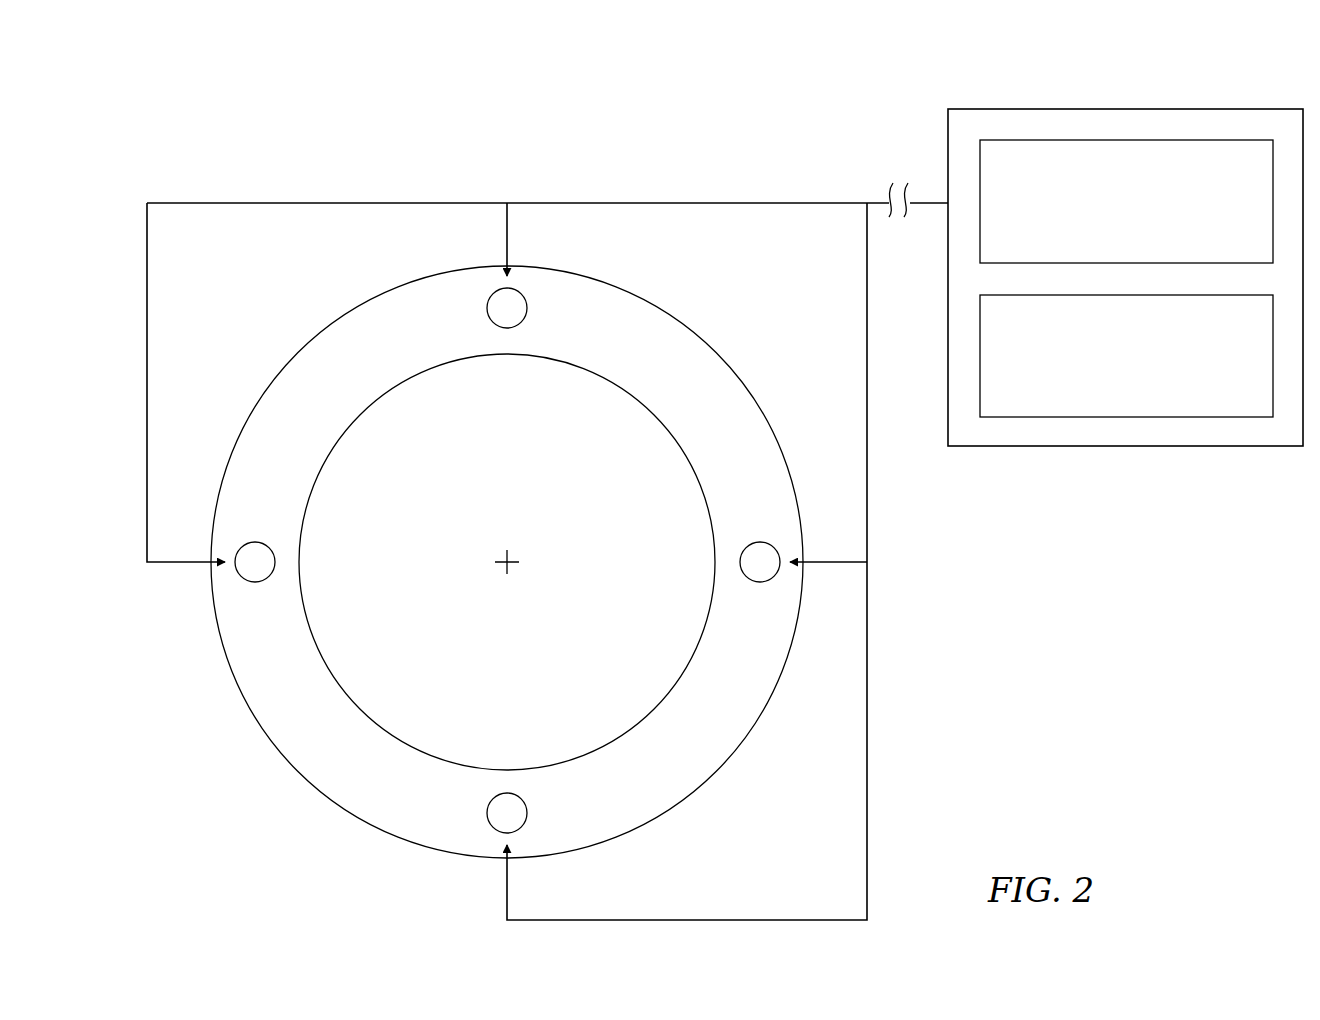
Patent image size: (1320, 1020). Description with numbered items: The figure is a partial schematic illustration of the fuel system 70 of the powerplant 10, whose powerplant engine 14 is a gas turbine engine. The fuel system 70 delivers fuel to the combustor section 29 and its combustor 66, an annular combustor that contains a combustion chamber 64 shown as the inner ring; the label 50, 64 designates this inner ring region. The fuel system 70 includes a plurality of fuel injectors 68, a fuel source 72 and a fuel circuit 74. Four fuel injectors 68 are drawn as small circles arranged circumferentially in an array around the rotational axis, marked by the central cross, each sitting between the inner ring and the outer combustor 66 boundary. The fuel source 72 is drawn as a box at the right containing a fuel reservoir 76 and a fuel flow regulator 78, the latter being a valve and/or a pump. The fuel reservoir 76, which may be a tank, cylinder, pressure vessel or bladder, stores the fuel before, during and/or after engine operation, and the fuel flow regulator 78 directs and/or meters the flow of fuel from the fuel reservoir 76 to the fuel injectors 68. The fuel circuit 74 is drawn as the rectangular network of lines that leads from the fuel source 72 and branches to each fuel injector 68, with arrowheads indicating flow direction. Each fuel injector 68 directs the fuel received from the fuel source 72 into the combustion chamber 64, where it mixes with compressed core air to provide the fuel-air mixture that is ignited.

The powerplant 10 is at (170, 130).
The powerplant engine 14 is at (507, 520).
The combustor section 29 is at (684, 255).
The hub 50 is at (507, 562).
The combustion chamber 64 is at (704, 388).
The combustor 66 is at (728, 359).
The fuel injectors 68 is at (508, 328).
The fuel system 70 is at (873, 120).
The fuel source 72 is at (1222, 92).
The fuel circuit 74 is at (797, 201).
The fuel reservoir 76 is at (1111, 387).
The fuel flow regulator 78 is at (1111, 233).